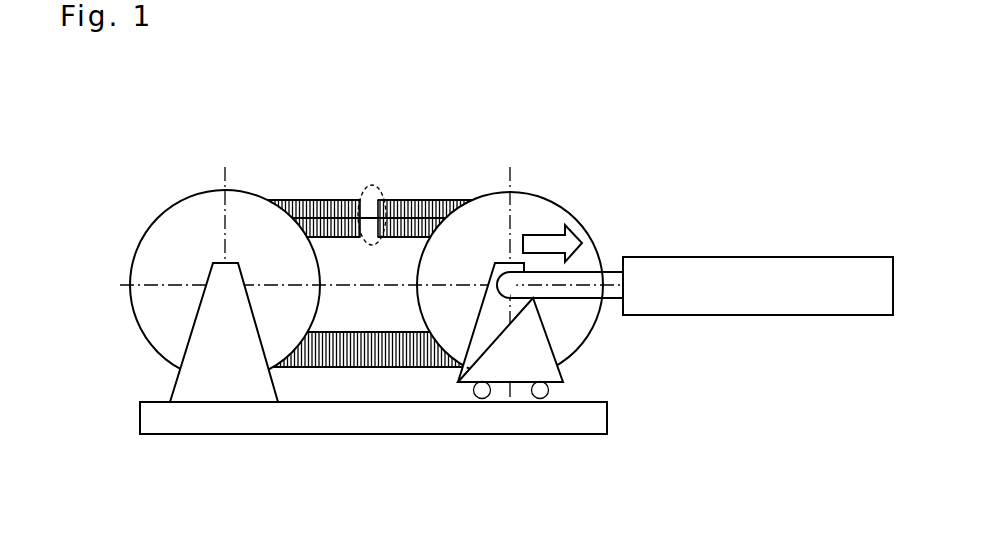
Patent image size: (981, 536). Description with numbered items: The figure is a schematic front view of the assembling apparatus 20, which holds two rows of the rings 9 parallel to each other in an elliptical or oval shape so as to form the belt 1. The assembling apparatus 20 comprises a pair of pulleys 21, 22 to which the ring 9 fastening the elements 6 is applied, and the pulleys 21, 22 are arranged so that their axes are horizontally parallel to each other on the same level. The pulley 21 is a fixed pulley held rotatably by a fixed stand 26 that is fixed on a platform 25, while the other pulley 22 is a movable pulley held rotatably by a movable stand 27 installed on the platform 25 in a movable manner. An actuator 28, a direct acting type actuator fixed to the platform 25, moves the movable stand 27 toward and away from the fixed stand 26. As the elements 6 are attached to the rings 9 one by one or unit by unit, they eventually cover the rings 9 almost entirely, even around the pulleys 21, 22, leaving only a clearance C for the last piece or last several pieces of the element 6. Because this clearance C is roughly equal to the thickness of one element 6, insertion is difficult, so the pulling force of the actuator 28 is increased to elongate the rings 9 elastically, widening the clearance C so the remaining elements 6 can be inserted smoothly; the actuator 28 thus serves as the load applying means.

The belt 1 is at (343, 380).
The element 6 is at (418, 200).
The ring 9 is at (377, 232).
The clearance C is at (357, 195).
The assembling apparatus 20 is at (560, 130).
The pulley 21 is at (160, 208).
The pulley 22 is at (573, 210).
The platform 25 is at (212, 435).
The fixed stand 26 is at (190, 383).
The movable stand 27 is at (552, 372).
The actuator 28 is at (753, 268).